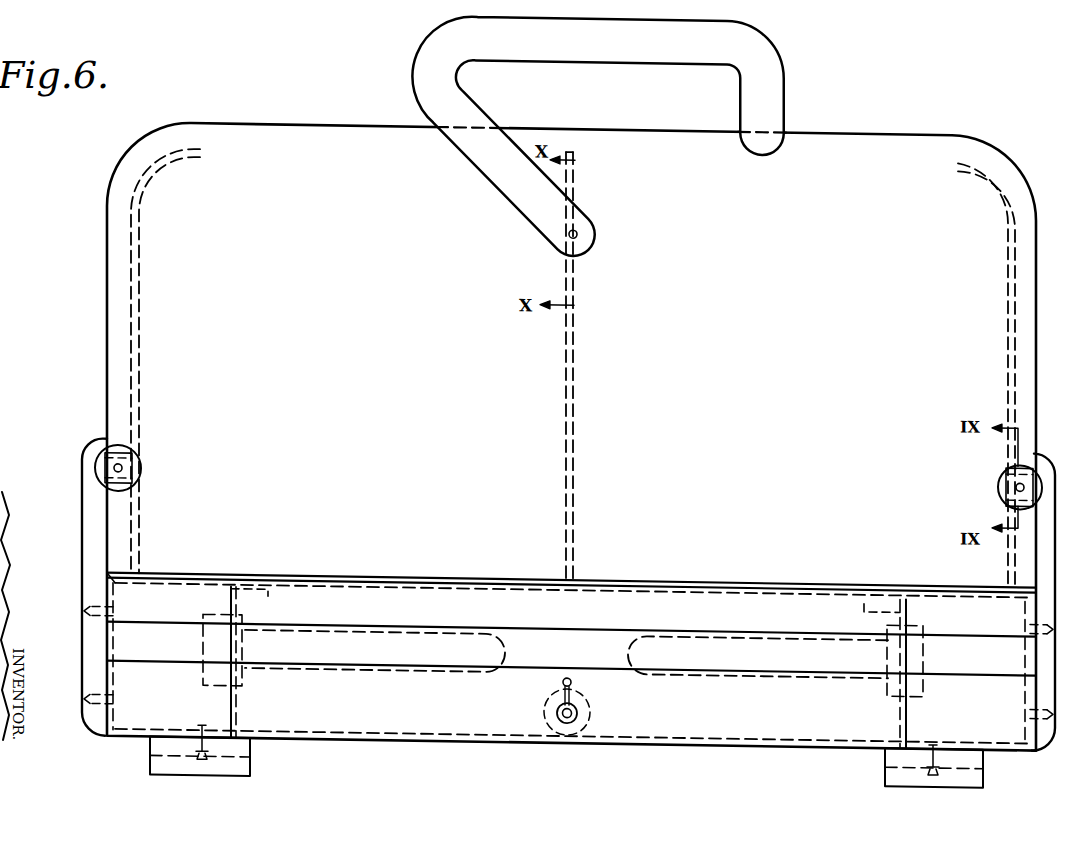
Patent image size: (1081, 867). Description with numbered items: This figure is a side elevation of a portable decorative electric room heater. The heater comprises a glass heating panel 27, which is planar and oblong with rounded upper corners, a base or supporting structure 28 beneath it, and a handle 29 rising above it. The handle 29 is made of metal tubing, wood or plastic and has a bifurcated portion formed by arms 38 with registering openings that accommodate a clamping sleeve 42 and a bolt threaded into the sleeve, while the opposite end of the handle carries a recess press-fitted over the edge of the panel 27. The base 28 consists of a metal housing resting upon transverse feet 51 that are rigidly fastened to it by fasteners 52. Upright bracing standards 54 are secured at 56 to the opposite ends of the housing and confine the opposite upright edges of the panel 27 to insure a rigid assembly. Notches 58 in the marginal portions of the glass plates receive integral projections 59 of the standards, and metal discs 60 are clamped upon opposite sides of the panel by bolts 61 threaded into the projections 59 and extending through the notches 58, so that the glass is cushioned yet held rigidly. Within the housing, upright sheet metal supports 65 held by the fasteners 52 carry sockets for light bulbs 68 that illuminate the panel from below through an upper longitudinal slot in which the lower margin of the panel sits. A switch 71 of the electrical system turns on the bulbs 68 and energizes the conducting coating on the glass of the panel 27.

The glass heating panel 27 is at (892, 118).
The base or supporting structure 28 is at (148, 692).
The handle 29 is at (417, 38).
The arms 38 is at (508, 180).
The clamping sleeve 42 is at (578, 226).
The transverse feet 51 is at (252, 746).
The fasteners 52 is at (205, 744).
The upright bracing standards 54 is at (1040, 736).
The fastening of standards 56 is at (1040, 684).
The notches 58 is at (121, 453).
The integral projections 59 is at (106, 460).
The metal discs 60 is at (136, 466).
The bolts 61 is at (122, 468).
The upright sheet metal supports 65 is at (238, 596).
The light bulbs 68 is at (628, 641).
The switch 71 is at (560, 674).